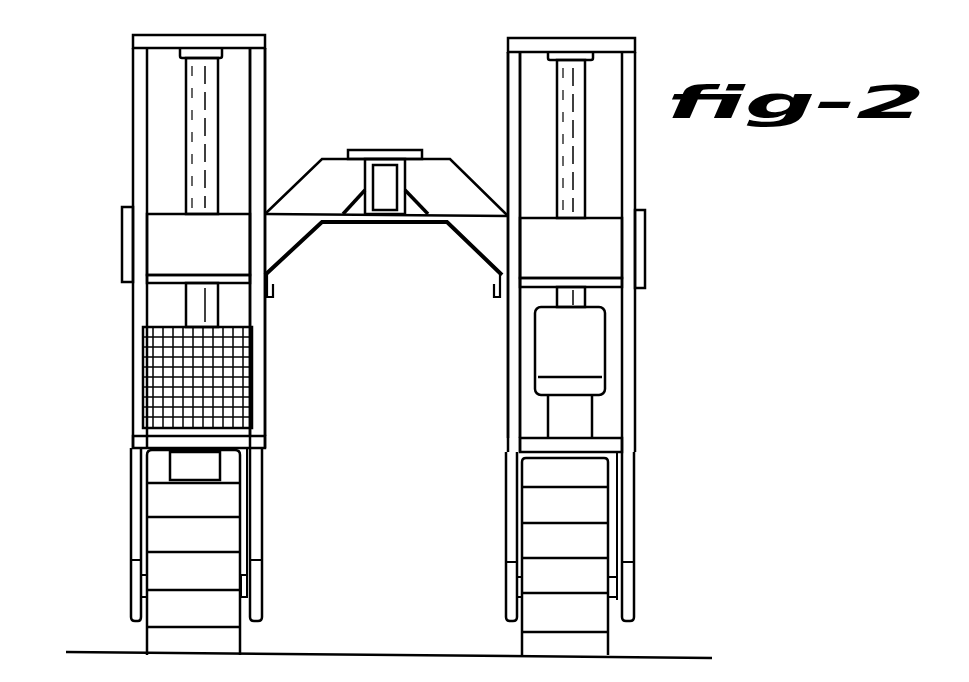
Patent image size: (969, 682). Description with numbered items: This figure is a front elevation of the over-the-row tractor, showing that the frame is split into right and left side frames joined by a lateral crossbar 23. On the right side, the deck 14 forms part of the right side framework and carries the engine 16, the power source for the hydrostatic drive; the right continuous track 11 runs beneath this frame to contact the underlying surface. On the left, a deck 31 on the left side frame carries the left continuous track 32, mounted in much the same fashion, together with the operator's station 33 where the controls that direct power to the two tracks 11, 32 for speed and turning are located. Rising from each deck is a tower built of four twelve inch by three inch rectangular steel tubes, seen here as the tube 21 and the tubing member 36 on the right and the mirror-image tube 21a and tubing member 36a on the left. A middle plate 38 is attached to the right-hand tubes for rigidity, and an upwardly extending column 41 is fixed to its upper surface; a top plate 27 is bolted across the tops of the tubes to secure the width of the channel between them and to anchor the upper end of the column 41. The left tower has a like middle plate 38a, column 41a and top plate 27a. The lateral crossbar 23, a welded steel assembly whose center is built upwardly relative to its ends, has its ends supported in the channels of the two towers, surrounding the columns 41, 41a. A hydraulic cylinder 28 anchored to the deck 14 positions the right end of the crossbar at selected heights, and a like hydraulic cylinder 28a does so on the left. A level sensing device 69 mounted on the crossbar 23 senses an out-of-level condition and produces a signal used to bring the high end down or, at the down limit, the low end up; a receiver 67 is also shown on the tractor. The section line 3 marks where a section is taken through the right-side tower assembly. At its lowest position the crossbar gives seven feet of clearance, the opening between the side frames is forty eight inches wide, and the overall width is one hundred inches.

The section line 3- 3 is at (196, 5).
The continuous track 11 is at (160, 505).
The deck 14 is at (133, 442).
The engine 16 is at (265, 365).
The rectangular tube 21 is at (133, 102).
The rectangular tube 21a is at (640, 190).
The lateral crossbar 23 is at (464, 172).
The top plate 27 is at (140, 40).
The top plate 27a is at (512, 42).
The hydraulic cylinder 28 is at (172, 297).
The hydraulic cylinder 28a is at (585, 305).
The deck 31 is at (605, 437).
The left continuous track 32 is at (600, 500).
The operator's station 33 is at (600, 370).
The steel tubing member 36 is at (265, 100).
The steel tubing member 36a is at (510, 80).
The middle plate 38 is at (162, 279).
The middle plate 38a is at (610, 294).
The column 41 is at (195, 130).
The column 41a is at (580, 160).
The receiver 67 is at (360, 202).
The level sensing device 69 is at (395, 150).